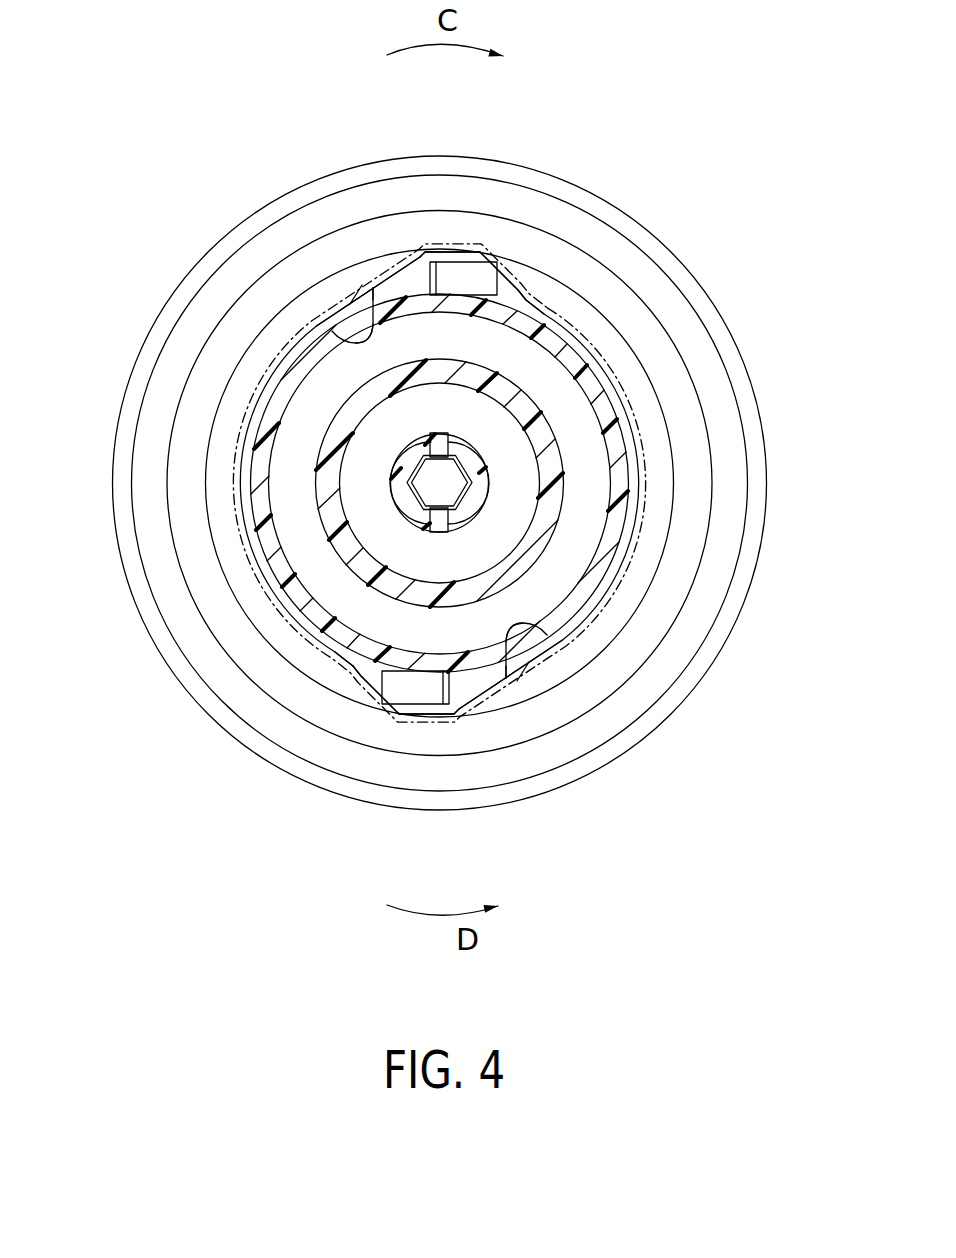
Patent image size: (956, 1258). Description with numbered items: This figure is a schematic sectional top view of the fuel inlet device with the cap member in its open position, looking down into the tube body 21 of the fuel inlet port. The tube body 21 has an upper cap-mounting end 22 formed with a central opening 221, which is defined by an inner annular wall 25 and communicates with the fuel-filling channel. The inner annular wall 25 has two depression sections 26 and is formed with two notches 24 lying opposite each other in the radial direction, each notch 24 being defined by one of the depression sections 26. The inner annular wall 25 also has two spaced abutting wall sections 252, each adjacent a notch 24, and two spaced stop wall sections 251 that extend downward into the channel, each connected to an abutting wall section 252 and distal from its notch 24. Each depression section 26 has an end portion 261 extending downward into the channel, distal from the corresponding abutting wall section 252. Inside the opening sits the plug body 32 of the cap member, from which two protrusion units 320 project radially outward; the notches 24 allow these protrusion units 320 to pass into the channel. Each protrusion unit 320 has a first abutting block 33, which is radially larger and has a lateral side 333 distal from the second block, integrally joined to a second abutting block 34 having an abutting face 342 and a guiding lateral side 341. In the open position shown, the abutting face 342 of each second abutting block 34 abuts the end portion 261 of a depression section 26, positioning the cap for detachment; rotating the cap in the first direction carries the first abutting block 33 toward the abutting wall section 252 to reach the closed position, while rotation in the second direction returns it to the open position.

The tube body 21 is at (772, 491).
The upper cap-mounting end 22 is at (762, 426).
The central opening 221 is at (240, 500).
The notches 24 is at (480, 259).
The inner annular wall 25 is at (616, 353).
The stop wall sections 251 is at (322, 314).
The abutting wall sections 252 is at (625, 388).
The depression sections 26 is at (412, 240).
The end portion 261 is at (362, 285).
The plug body 32 is at (612, 418).
The protrusion units 320 is at (495, 284).
The first abutting block 33 is at (463, 277).
The lateral side 333 is at (520, 285).
The second abutting block 34 is at (370, 318).
The guiding lateral side 341 is at (348, 298).
The abutting face 342 is at (352, 290).